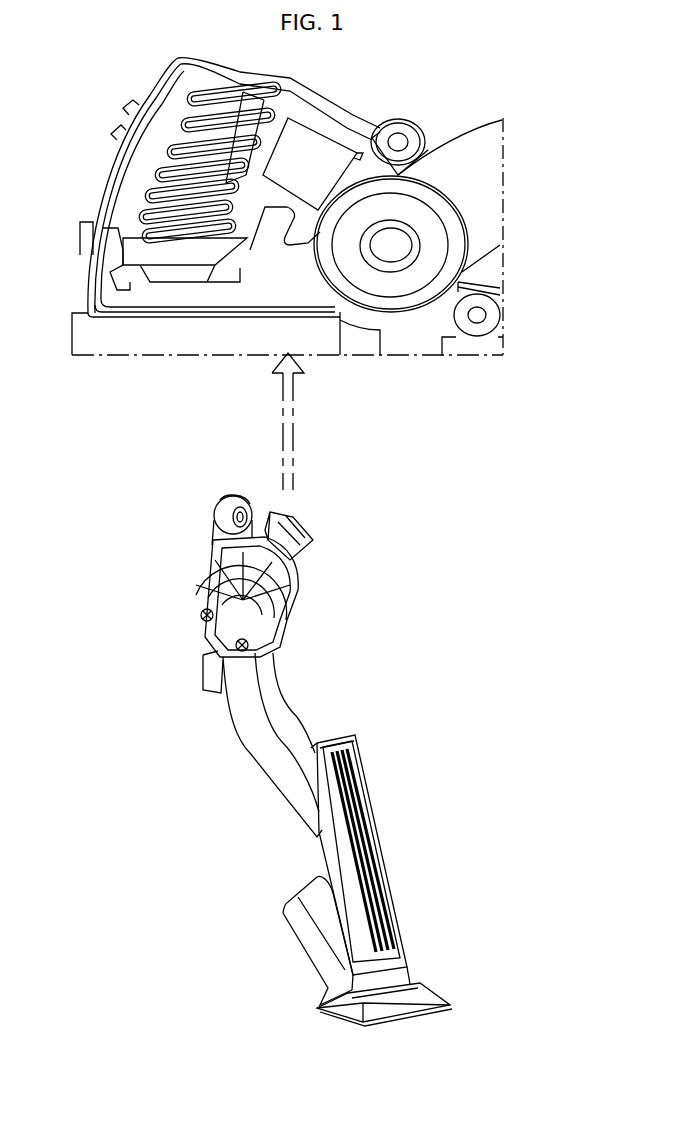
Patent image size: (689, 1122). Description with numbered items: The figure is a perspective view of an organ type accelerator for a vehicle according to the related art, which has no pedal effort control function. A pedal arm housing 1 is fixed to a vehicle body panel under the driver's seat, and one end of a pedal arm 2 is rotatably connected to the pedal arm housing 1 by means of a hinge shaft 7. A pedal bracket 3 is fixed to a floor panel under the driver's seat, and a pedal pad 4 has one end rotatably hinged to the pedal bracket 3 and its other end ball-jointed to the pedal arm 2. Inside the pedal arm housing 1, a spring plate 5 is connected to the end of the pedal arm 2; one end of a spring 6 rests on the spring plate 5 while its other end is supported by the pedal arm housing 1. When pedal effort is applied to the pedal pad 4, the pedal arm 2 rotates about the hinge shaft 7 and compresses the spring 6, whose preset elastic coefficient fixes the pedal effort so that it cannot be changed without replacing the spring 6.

The pedal arm housing 1 is at (125, 110).
The pedal arm 2 is at (487, 197).
The pedal bracket 3 is at (300, 933).
The pedal pad 4 is at (380, 862).
The spring plate 5 is at (175, 257).
The spring 6 is at (160, 188).
The hinge shaft 7 is at (392, 248).